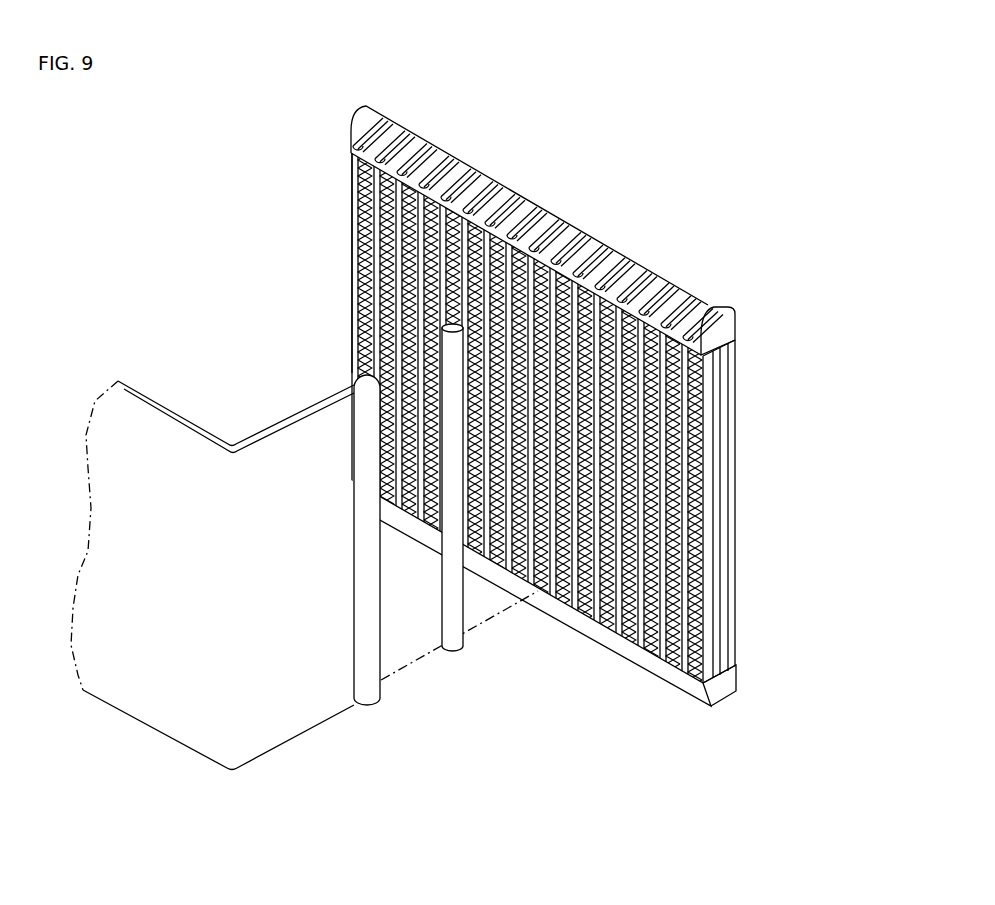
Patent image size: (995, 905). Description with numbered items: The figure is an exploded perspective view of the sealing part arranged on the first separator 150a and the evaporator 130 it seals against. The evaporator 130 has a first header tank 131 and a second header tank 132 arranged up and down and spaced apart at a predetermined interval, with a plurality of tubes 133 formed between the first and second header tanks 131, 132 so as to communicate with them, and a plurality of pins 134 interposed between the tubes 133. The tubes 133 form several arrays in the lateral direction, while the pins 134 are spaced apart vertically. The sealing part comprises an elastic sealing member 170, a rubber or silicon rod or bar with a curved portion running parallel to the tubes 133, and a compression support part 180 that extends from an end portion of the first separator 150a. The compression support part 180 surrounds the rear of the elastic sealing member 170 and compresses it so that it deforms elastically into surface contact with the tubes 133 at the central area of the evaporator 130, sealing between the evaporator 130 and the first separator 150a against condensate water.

The evaporator 130 is at (570, 426).
The first header tank 131 is at (693, 284).
The second header tank 132 is at (662, 672).
The tube 133 is at (560, 598).
The pin 134 is at (612, 628).
The elastic sealing member 170 is at (370, 307).
The compression support part 180 is at (382, 626).
The first separator 150a is at (168, 673).